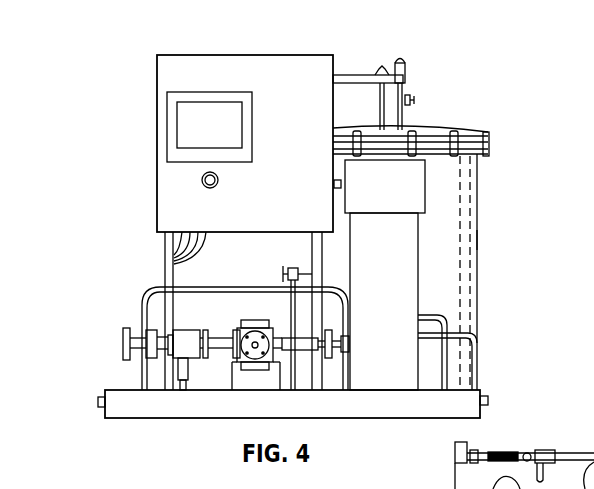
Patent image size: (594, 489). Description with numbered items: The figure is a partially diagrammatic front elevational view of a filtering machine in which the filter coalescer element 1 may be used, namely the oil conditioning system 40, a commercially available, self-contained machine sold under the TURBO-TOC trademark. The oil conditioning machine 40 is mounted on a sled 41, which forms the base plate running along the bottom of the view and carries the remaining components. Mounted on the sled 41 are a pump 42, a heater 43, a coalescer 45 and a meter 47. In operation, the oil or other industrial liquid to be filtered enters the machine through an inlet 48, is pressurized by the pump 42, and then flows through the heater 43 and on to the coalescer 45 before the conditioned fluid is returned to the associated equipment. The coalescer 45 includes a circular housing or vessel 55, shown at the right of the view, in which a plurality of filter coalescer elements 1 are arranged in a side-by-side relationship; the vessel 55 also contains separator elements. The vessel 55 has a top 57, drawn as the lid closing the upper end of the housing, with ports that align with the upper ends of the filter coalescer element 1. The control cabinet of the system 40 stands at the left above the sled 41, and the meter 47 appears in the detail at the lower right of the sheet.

The oil conditioning system 40 is at (148, 64).
The sled 41 is at (108, 390).
The pump 42 is at (240, 328).
The heater 43 is at (379, 275).
The coalescer 45 is at (488, 134).
The meter 47 is at (499, 488).
The inlet 48 is at (122, 340).
The vessel 55 is at (477, 238).
The top 57 is at (432, 128).
The filter coalescer element 1 is at (468, 187).